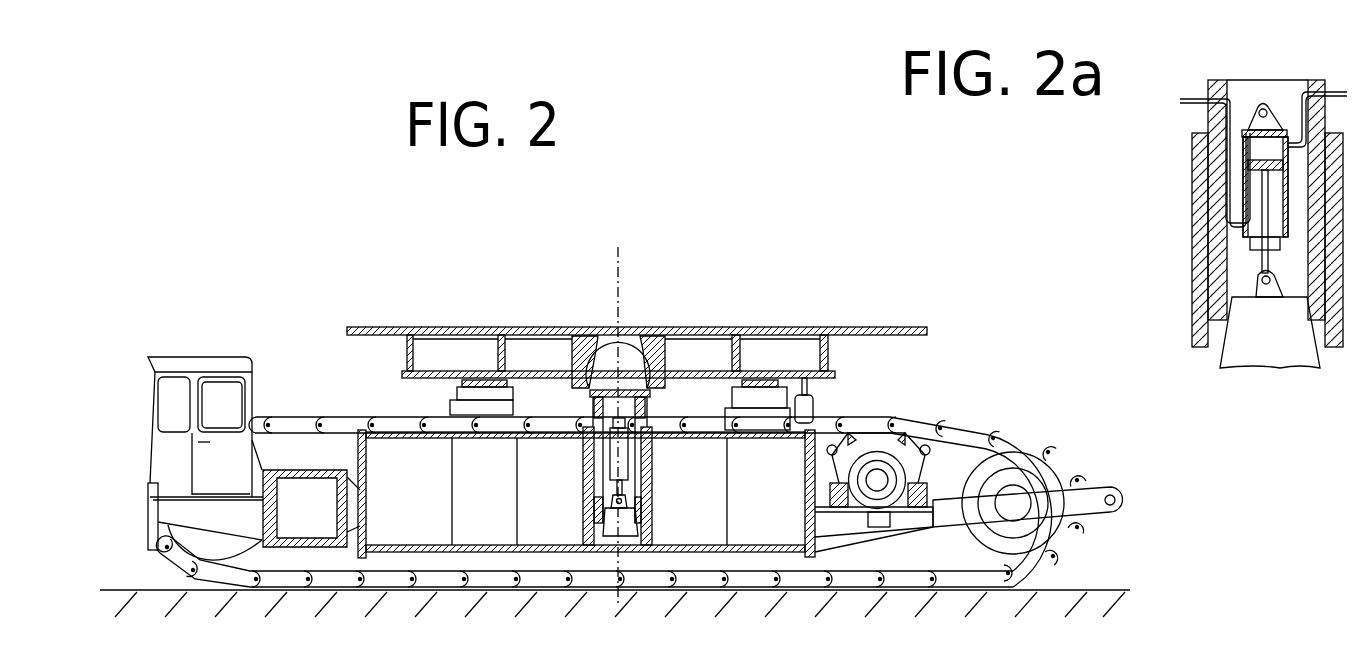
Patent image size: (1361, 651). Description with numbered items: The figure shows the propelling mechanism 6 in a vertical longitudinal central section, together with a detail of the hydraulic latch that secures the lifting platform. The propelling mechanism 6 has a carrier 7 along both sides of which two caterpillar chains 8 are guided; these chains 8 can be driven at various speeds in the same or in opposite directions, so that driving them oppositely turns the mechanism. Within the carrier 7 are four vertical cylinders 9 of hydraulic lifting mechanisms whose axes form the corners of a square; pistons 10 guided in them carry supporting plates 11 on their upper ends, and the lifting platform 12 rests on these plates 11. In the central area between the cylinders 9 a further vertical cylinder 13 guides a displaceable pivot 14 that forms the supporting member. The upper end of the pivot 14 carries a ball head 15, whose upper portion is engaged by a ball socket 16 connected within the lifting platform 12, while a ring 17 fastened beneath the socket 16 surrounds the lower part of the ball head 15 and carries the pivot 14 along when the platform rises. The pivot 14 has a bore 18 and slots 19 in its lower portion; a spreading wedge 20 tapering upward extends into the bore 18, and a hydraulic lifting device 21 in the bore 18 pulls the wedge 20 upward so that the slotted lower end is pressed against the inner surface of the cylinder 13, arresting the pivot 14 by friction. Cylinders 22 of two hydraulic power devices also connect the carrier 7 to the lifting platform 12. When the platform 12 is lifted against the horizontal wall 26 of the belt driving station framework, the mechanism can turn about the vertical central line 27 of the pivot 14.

In FIG. 2, the propelling mechanism 6 is at (240, 294).
In FIG. 2, the carrier 7 is at (410, 532).
In FIG. 2, the caterpillar chains 8 is at (1022, 440).
In FIG. 2, the cylinders 9 is at (505, 494).
In FIG. 2, the pistons 10 is at (452, 398).
In FIG. 2, the supporting plates 11 is at (462, 382).
In FIG. 2, the lifting platform 12 is at (766, 350).
In FIG. 2, the cylinder 13 is at (654, 478).
In FIG. 2a, the cylinder 13 is at (1197, 160).
In FIG. 2, the pivot 14 is at (646, 408).
In FIG. 2a, the pivot 14 is at (1315, 95).
In FIG. 2, the ball head 15 is at (606, 362).
In FIG. 2, the ball socket 16 is at (660, 357).
In FIG. 2, the ring 17 is at (578, 386).
In FIG. 2, the bore 18 is at (632, 492).
In FIG. 2a, the bore 18 is at (1297, 277).
In FIG. 2, the slots 19 is at (646, 513).
In FIG. 2, the spreading wedge 20 is at (631, 537).
In FIG. 2a, the spreading wedge 20 is at (1281, 352).
In FIG. 2, the hydraulic lifting device 21 is at (612, 452).
In FIG. 2a, the hydraulic lifting device 21 is at (1246, 193).
In FIG. 2, the cylinders 22 is at (812, 408).
In FIG. 2, the horizontal wall 26 is at (376, 326).
In FIG. 2, the vertical central line 27 is at (612, 270).